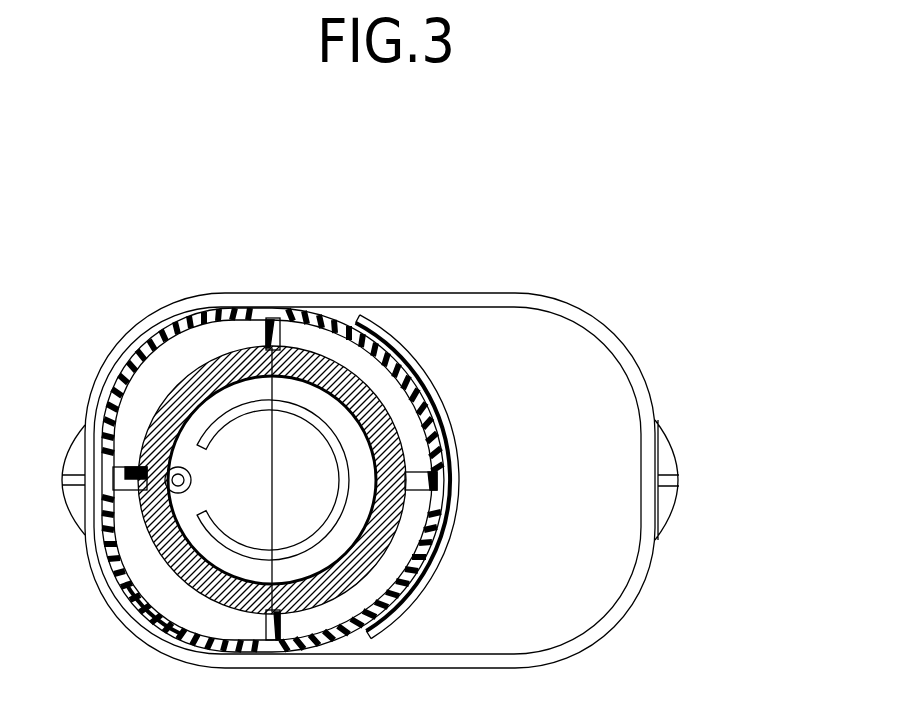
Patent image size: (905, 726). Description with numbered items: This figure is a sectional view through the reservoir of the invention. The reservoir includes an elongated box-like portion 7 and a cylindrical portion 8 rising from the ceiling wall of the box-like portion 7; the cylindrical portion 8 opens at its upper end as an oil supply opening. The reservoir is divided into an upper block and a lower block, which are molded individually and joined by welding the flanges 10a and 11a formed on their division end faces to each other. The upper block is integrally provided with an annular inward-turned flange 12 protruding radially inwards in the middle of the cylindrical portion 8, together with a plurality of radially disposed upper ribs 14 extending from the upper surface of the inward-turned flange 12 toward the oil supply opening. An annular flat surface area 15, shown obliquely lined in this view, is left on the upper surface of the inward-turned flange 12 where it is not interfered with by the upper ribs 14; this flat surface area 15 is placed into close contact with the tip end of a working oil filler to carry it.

The box-like portion 7 is at (408, 333).
The cylindrical portion 8 is at (328, 315).
The welding flange 10a is at (428, 480).
The welding flange 11a is at (628, 358).
The inward-turned flange 12 is at (413, 453).
The upper ribs 14 is at (250, 324).
The annular flat surface area 15 is at (405, 405).